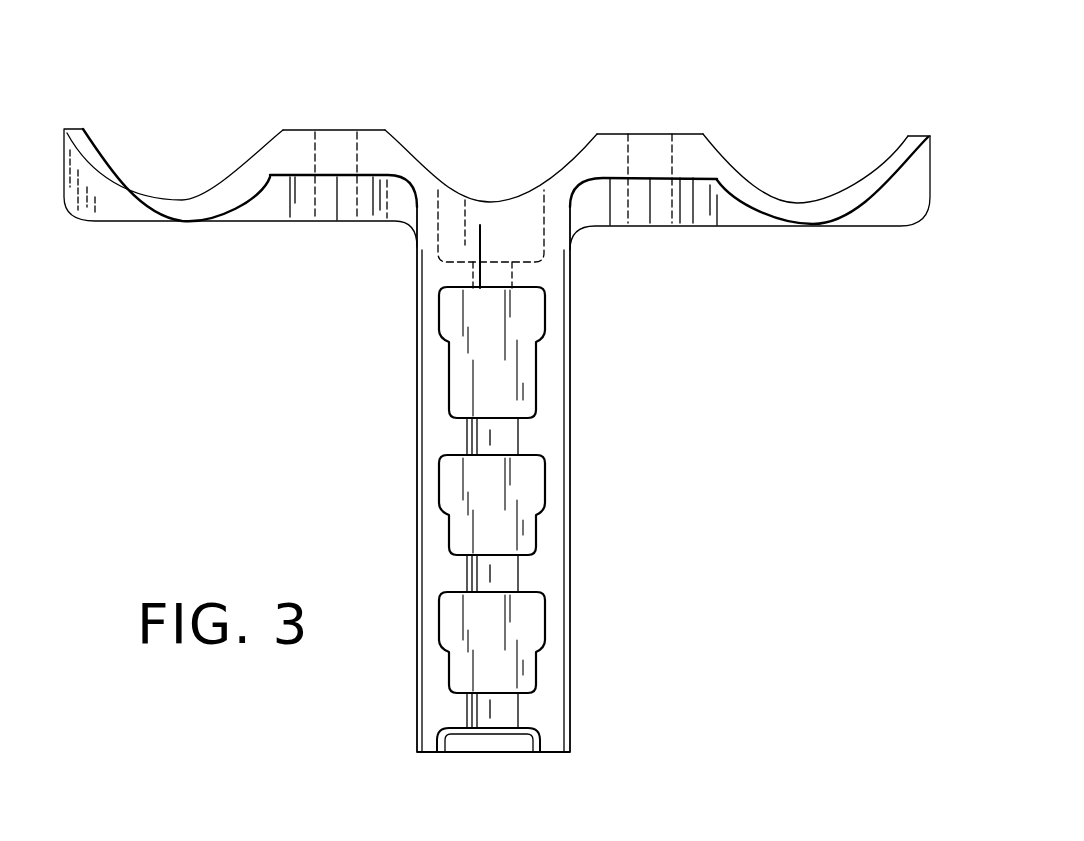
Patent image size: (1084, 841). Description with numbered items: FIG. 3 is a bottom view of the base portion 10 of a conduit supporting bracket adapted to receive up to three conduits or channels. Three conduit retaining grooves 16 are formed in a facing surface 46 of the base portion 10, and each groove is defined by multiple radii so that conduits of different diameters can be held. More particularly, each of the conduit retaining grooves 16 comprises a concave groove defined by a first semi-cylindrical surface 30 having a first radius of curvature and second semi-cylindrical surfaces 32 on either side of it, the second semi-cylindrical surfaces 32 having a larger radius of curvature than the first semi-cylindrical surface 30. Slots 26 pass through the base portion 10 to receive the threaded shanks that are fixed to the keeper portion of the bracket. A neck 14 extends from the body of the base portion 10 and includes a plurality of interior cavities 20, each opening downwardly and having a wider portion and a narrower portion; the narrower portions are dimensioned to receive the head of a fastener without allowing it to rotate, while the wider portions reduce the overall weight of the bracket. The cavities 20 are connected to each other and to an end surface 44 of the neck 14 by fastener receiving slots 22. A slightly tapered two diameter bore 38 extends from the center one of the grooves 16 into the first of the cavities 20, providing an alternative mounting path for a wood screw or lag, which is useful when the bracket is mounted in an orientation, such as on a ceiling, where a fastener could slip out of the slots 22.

The base portion 10 is at (735, 65).
The neck 14 is at (543, 447).
The conduit retaining grooves 16 is at (134, 140).
The interior cavities 20 is at (503, 373).
The fastener receiving slots 22 is at (477, 427).
The slots 26 is at (317, 142).
The first semi-cylindrical surface 30 is at (160, 197).
The second semi-cylindrical surfaces 32 is at (94, 141).
The two diameter bore 38 is at (438, 240).
The end surface 44 is at (555, 753).
The facing surface 46 is at (600, 133).